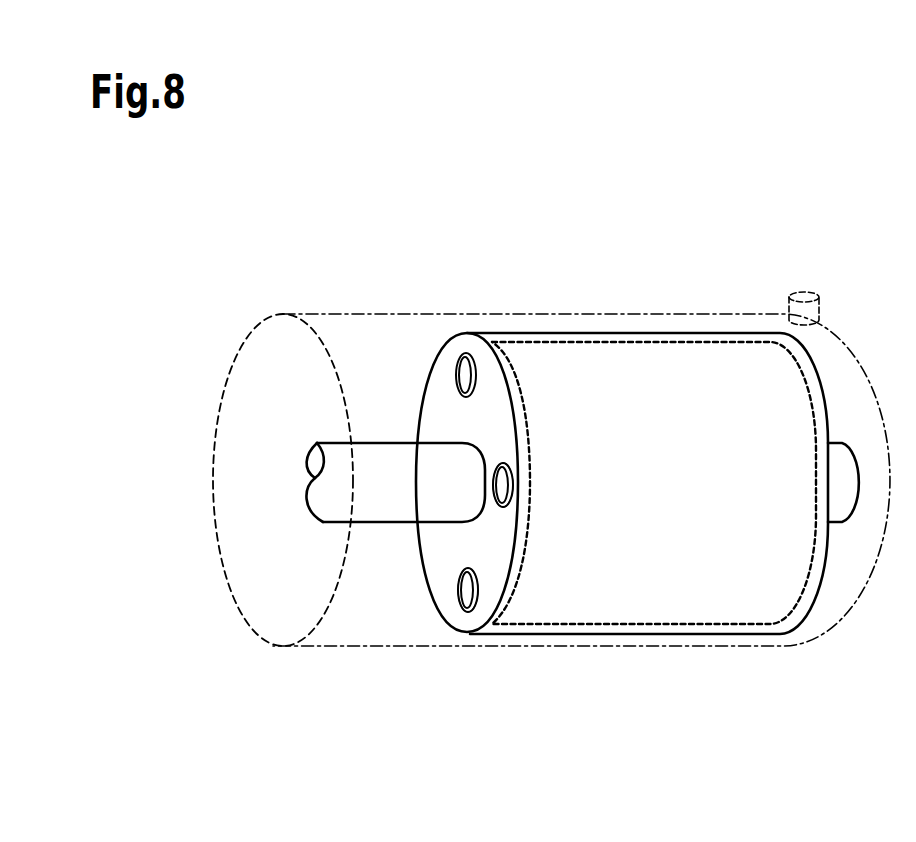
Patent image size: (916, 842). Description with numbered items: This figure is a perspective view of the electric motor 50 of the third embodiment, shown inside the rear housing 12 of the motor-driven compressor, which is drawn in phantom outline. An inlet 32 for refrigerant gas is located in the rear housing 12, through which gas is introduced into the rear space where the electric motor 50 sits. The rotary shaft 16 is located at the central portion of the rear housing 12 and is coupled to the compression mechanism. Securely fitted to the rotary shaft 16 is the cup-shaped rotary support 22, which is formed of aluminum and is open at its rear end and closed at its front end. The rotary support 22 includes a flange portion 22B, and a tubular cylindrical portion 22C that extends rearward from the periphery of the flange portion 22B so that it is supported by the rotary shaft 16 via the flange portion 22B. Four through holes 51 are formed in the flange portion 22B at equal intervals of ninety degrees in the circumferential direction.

The electric motor 50 is at (465, 215).
The rear housing 12 is at (597, 647).
The inlet 32 is at (824, 311).
The rotary support 22 is at (620, 333).
The cylindrical portion 22C is at (692, 350).
The flange portion 22B is at (440, 390).
The rotary shaft 16 is at (331, 500).
The through holes 51 is at (503, 490).